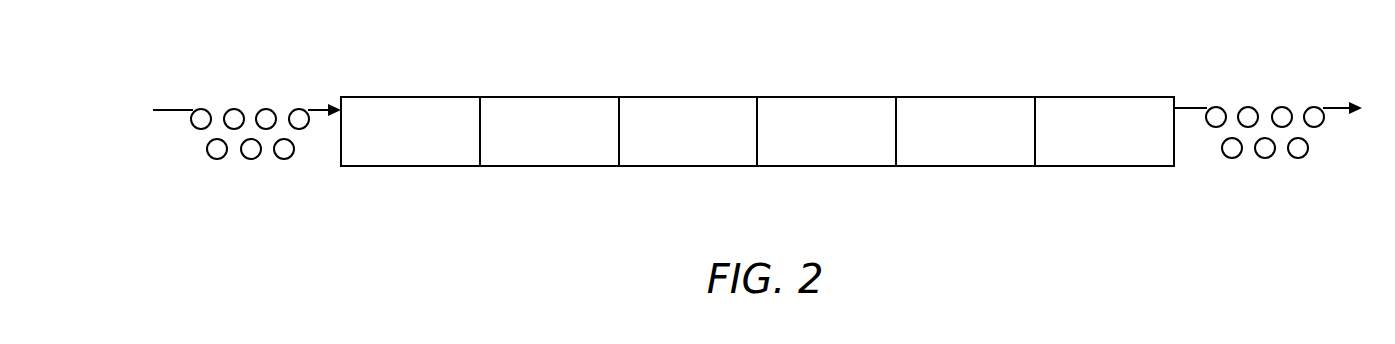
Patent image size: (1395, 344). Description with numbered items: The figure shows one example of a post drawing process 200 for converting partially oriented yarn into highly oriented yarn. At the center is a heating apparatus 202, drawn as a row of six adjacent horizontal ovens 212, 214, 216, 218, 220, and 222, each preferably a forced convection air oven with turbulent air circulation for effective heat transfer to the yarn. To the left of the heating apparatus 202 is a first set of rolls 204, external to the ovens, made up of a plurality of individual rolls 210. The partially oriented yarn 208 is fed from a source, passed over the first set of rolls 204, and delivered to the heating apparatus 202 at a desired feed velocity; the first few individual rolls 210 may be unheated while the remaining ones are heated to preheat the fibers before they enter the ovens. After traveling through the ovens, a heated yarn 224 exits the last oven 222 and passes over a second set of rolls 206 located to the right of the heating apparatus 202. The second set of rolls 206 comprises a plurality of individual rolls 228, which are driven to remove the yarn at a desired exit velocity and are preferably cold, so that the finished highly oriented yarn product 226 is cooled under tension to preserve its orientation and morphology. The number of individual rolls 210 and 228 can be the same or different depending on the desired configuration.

The post drawing process 200 is at (370, 243).
The heating apparatus 202 is at (757, 135).
The first set of rolls 204 is at (254, 90).
The second set of rolls 206 is at (1270, 91).
The partially oriented yarn 208 is at (177, 108).
The individual rolls 210 is at (217, 159).
The horizontal oven 212 is at (410, 95).
The horizontal oven 214 is at (548, 95).
The horizontal oven 216 is at (688, 95).
The horizontal oven 218 is at (826, 95).
The horizontal oven 220 is at (965, 95).
The last oven 222 is at (1107, 95).
The heated yarn 224 is at (1197, 105).
The highly oriented yarn product 226 is at (1338, 105).
The individual rolls 228 is at (1232, 158).